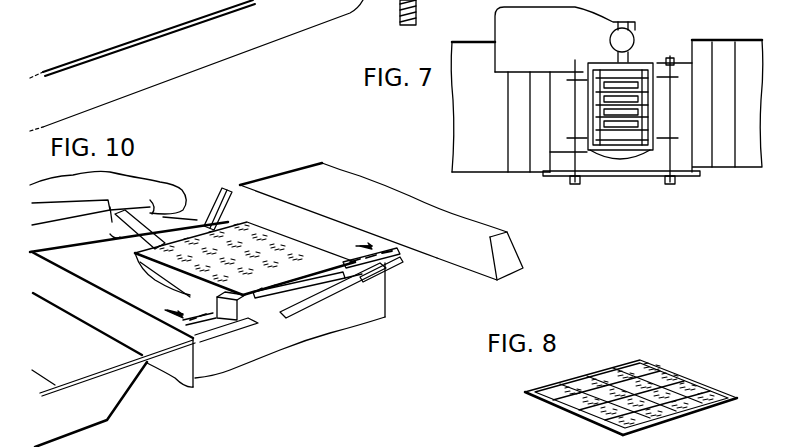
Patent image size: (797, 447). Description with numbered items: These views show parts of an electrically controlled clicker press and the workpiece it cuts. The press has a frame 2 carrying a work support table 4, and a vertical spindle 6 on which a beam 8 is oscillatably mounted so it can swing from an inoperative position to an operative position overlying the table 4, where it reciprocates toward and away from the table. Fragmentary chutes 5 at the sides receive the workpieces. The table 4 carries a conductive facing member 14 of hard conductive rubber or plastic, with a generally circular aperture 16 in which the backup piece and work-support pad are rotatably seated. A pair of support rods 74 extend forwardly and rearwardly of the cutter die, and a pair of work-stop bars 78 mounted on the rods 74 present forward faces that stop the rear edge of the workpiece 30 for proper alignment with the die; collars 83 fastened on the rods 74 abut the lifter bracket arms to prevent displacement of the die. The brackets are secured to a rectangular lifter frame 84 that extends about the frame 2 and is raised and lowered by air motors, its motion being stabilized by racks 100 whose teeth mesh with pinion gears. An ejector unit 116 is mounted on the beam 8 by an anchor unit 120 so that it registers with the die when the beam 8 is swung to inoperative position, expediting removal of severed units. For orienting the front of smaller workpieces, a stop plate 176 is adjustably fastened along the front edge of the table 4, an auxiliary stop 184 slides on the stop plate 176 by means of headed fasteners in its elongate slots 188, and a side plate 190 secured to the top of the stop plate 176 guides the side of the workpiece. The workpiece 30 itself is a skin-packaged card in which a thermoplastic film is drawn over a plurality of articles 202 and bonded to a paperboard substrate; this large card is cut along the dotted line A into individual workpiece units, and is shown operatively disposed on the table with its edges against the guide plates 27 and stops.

In FIG. 10, the frame 2 is at (357, 330).
In FIG. 7, the frame 2 is at (686, 58).
In FIG. 10, the work support table 4 is at (155, 288).
In FIG. 7, the work support table 4 is at (600, 162).
In FIG. 10, the chutes 5 is at (117, 403).
In FIG. 7, the chutes 5 is at (480, 40).
In FIG. 10, the vertical spindle 6 is at (112, 237).
In FIG. 10, the beam 8 is at (160, 182).
In FIG. 10, the conductive facing member 14 is at (108, 292).
In FIG. 7, the conductive facing member 14 is at (550, 120).
In FIG. 10, the circular aperture 16 is at (150, 280).
In FIG. 10, the rail 27 is at (310, 314).
In FIG. 10, the workpiece 30 is at (255, 238).
In FIG. 8, the workpiece 30 is at (701, 381).
In FIG. 7, the support rods 74 is at (567, 177).
In FIG. 10, the work-stop bars 78 is at (135, 214).
In FIG. 7, the collars 83 is at (577, 182).
In FIG. 7, the lifter frame 84 is at (595, 178).
In FIG. 10, the racks 100 is at (400, 12).
In FIG. 7, the ejector unit 116 is at (660, 100).
In FIG. 7, the anchor unit 120 is at (633, 62).
In FIG. 10, the stop plate 176 is at (337, 300).
In FIG. 10, the auxiliary stop 184 is at (325, 292).
In FIG. 10, the elongate slots 188 is at (378, 283).
In FIG. 10, the side plate 190 is at (265, 317).
In FIG. 10, the article 202 is at (282, 240).
In FIG. 8, the dotted line A is at (718, 402).